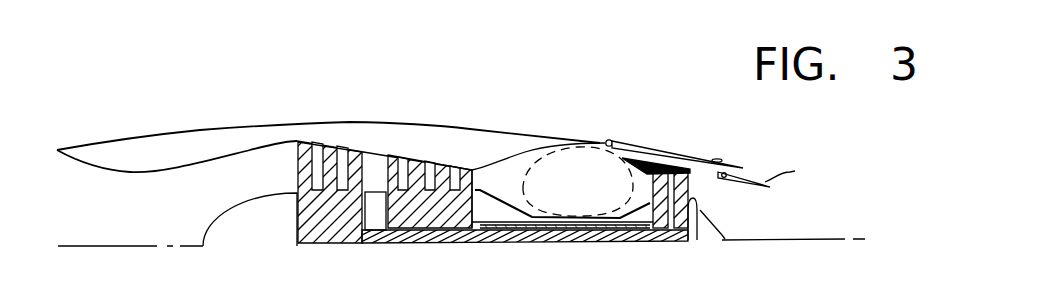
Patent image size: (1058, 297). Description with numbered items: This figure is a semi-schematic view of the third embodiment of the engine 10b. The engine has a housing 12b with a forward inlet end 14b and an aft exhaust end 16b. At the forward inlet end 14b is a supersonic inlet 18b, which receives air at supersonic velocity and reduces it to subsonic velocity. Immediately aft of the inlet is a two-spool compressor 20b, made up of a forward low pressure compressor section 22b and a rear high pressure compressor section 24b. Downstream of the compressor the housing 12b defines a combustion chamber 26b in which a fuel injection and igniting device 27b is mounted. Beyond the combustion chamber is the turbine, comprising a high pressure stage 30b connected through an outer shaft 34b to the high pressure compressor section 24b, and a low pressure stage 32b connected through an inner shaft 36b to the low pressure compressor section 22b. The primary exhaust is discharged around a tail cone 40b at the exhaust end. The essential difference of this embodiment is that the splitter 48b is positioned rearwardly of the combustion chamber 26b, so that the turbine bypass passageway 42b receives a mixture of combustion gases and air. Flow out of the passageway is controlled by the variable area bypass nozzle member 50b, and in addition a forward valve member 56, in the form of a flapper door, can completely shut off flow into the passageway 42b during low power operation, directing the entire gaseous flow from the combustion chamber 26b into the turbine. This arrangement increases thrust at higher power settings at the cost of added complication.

The engine 10b is at (282, 64).
The housing 12b is at (240, 115).
The forward inlet end 14b is at (157, 122).
The aft exhaust end 16b is at (732, 216).
The supersonic inlet 18b is at (92, 190).
The compressor 20b is at (375, 95).
The low pressure compressor section 22b is at (368, 113).
The high pressure compressor section 24b is at (482, 113).
The combustion chamber 26b is at (573, 195).
The fuel injection and igniting device 27b is at (521, 192).
The high pressure turbine stage 30b is at (655, 205).
The low pressure turbine stage 32b is at (697, 202).
The outer shaft 34b is at (482, 240).
The inner shaft 36b is at (422, 241).
The tail cone 40b is at (722, 238).
The turbine bypass passageway 42b is at (663, 163).
The splitter 48b is at (597, 141).
The bypass nozzle member 50b is at (730, 162).
The forward valve member 56 is at (617, 142).